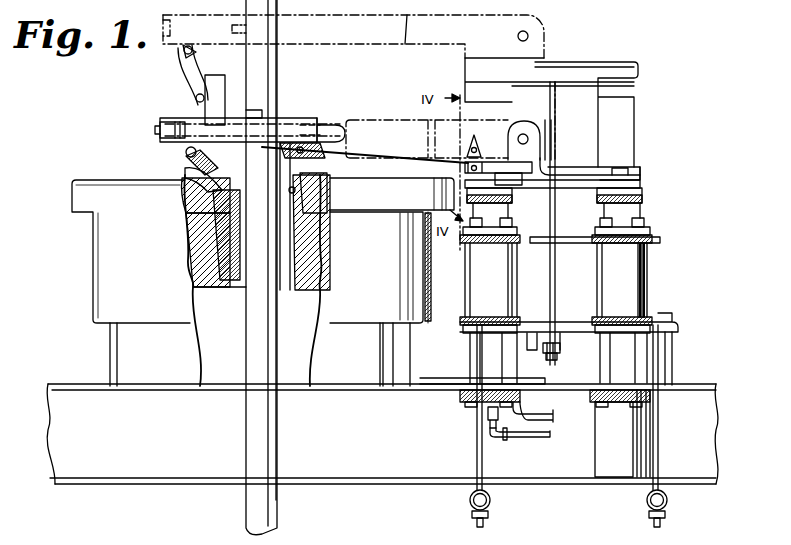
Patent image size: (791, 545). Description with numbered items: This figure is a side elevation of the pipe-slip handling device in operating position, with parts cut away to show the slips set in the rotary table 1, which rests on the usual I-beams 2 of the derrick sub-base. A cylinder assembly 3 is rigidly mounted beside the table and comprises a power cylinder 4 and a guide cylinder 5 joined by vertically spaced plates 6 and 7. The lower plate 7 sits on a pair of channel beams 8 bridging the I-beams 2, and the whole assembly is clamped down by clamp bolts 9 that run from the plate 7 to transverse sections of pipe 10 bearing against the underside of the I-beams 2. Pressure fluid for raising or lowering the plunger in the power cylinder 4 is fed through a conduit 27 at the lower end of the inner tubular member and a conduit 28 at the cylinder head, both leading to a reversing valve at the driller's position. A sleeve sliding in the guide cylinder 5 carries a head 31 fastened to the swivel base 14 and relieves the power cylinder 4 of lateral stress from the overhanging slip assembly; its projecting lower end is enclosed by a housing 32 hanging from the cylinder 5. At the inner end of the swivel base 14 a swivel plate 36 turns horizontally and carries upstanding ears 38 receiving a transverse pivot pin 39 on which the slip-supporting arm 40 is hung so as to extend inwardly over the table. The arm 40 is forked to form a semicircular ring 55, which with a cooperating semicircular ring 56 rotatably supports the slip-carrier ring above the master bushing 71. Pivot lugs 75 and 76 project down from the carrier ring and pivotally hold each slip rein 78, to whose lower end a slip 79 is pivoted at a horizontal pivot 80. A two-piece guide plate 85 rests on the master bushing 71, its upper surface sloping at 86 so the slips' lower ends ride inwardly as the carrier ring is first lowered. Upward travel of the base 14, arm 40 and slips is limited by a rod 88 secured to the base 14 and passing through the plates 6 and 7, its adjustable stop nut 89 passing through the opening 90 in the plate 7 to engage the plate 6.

The rotary table 1 is at (110, 265).
The I-beams 2 is at (140, 473).
The cylinder assembly 3 is at (655, 296).
The power cylinder 4 is at (477, 280).
The guide cylinder 5 is at (620, 280).
The upper plate 6 is at (655, 240).
The lower plate 7 is at (686, 332).
The channel beams 8 is at (680, 358).
The clamp bolts 9 is at (477, 445).
The pipe sections 10 is at (491, 504).
The swivel base 14 is at (606, 170).
The conduit 27 is at (543, 438).
The conduit 28 is at (554, 416).
The head 31 is at (645, 197).
The housing 32 is at (612, 466).
The swivel plate 36 is at (545, 168).
The upstanding ears 38 is at (537, 142).
The transverse pivot pin 39 is at (523, 134).
The slip-supporting arm 40 is at (405, 138).
The semicircular ring 55 is at (312, 122).
The semicircular ring 56 is at (190, 118).
The master bushing 71 is at (200, 268).
The pivot lugs 75 is at (187, 153).
The pivot lugs 76 is at (296, 157).
The slip rein 78 is at (185, 188).
The slip 79 is at (243, 290).
The horizontal pivot 80 is at (186, 222).
The guide plate 85 is at (335, 192).
The sloping surface 86 is at (192, 178).
The rod 88 is at (556, 277).
The adjustable stop nut 89 is at (561, 352).
The opening 90 is at (556, 324).